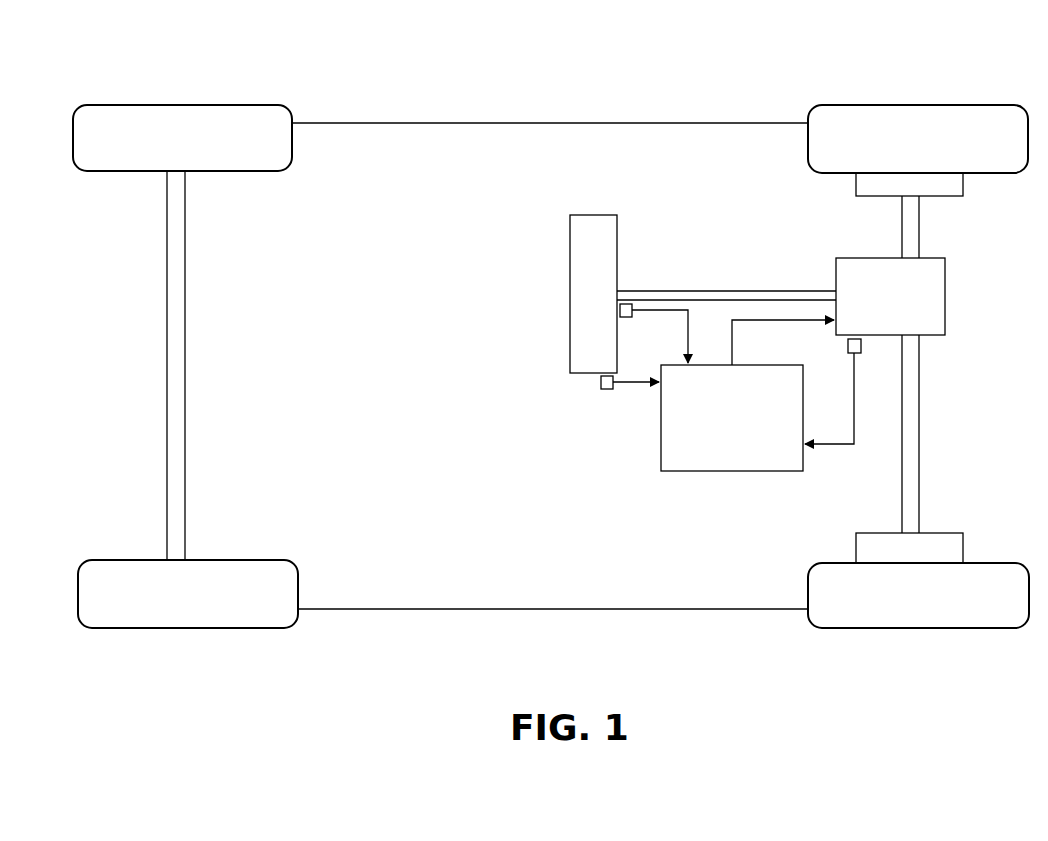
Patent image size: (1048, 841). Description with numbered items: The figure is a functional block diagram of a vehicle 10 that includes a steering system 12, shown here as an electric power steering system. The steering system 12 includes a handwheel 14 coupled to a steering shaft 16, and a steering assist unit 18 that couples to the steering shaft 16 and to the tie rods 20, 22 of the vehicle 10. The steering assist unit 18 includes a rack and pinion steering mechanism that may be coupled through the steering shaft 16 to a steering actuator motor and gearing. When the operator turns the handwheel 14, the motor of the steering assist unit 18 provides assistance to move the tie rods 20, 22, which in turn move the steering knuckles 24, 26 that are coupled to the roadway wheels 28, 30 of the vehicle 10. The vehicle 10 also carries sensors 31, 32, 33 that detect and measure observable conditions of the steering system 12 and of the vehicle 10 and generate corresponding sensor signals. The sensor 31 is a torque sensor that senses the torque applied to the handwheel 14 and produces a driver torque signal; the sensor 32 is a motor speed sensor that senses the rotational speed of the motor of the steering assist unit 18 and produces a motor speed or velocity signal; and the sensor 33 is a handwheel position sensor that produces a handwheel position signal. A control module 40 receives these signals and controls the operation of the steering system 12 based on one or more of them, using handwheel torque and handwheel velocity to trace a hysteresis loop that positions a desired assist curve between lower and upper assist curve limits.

The vehicle 10 is at (589, 32).
The steering system 12 is at (697, 193).
The handwheel 14 is at (592, 215).
The steering shaft 16 is at (699, 290).
The steering assist unit 18 is at (946, 295).
The tie rod 20 is at (920, 240).
The tie rod 22 is at (920, 405).
The steering knuckle 24 is at (853, 197).
The steering knuckle 26 is at (882, 533).
The roadway wheel 28 is at (965, 105).
The roadway wheel 30 is at (970, 562).
The torque sensor 31 is at (625, 318).
The motor speed sensor 32 is at (862, 345).
The handwheel position sensor 33 is at (605, 390).
The control module 40 is at (750, 365).